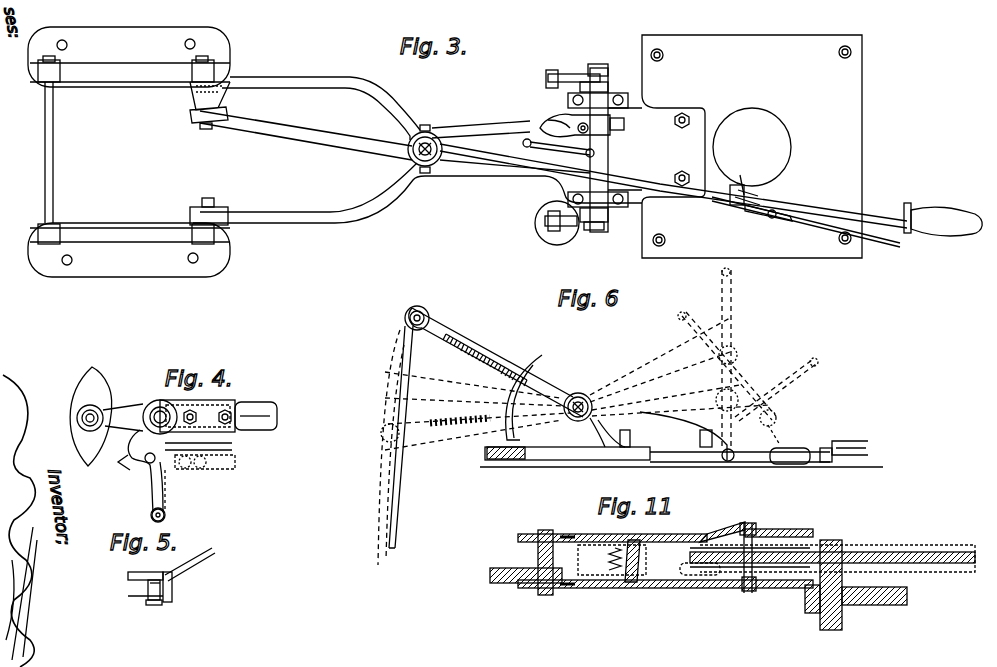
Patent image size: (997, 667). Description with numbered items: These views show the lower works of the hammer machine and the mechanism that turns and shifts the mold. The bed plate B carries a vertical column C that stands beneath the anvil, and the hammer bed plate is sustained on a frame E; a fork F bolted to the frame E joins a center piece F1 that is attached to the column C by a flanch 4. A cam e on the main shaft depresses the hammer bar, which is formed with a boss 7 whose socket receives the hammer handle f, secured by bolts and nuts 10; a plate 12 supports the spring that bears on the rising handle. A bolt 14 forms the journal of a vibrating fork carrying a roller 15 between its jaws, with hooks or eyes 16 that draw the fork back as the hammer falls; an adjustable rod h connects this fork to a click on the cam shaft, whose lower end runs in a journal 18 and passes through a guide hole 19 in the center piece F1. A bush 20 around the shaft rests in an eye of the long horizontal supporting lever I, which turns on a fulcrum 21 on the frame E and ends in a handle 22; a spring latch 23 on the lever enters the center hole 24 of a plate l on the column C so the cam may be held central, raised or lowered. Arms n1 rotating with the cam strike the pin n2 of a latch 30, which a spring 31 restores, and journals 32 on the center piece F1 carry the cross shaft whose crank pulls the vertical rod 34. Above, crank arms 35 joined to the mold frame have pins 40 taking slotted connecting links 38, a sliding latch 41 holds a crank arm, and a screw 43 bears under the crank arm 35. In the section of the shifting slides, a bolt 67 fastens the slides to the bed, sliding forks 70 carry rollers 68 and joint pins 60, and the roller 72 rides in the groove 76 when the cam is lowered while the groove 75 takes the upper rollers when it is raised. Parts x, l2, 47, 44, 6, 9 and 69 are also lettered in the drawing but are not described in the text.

In FIG. 3, the frame E is at (129, 152).
In FIG. 3, the fork F is at (315, 155).
In FIG. 3, the center piece F1 is at (630, 149).
In FIG. 3, the long horizontal supporting lever I is at (553, 169).
In FIG. 3, the bed plate B is at (752, 146).
In FIG. 3, the vertical column C is at (752, 147).
In FIG. 3, the guide hole 19 is at (417, 156).
In FIG. 3, the bush 20 is at (541, 181).
In FIG. 3, the fulcrum 21 is at (210, 115).
In FIG. 3, the handle 22 is at (943, 217).
In FIG. 3, the spring latch 23 is at (806, 226).
In FIG. 3, the center hole 24 is at (753, 200).
In FIG. 3, the flanch 4 is at (736, 185).
In FIG. 3, the plate l is at (729, 190).
In FIG. 3, the latch 30 is at (577, 113).
In FIG. 3, the spring 31 is at (563, 152).
In FIG. 3, the journals 32 is at (598, 150).
In FIG. 3, the vertical rod 34 is at (577, 75).
In FIG. 6, the vertical rod 34 is at (474, 445).
In FIG. 3, the arms n1 is at (481, 127).
In FIG. 3, the pin n2 is at (557, 226).
In FIG. 6, the sliding latch 41 is at (494, 361).
In FIG. 6, the pivot hub x is at (579, 397).
In FIG. 6, the curved sector l2 is at (562, 400).
In FIG. 6, the base bracket 47 is at (501, 448).
In FIG. 6, the hammer handle f is at (681, 461).
In FIG. 6, the screw 43 is at (673, 436).
In FIG. 6, the crank arms 35 is at (704, 364).
In FIG. 6, the connecting link 38 is at (780, 434).
In FIG. 6, the pin 40 is at (741, 456).
In FIG. 6, the end bracket 44 is at (862, 446).
In FIG. 4, the cam e is at (91, 416).
In FIG. 4, the connecting arm 6 is at (123, 421).
In FIG. 4, the bolts and nuts 10 is at (189, 417).
In FIG. 4, the plate 12 is at (251, 409).
In FIG. 4, the adjustable rod h is at (200, 450).
In FIG. 5, the adjustable rod h is at (190, 555).
In FIG. 4, the lever 9 is at (138, 475).
In FIG. 5, the lever 9 is at (147, 604).
In FIG. 4, the bolt 14 is at (150, 514).
In FIG. 5, the hook 16 is at (142, 582).
In FIG. 5, the roller 15 is at (155, 592).
In FIG. 11, the sliding fork 70 is at (665, 558).
In FIG. 11, the bolt 67 is at (526, 562).
In FIG. 11, the internal webs 69 is at (593, 559).
In FIG. 11, the pin 60 is at (612, 560).
In FIG. 11, the slot or groove 75 is at (832, 560).
In FIG. 11, the roller 68 is at (750, 554).
In FIG. 11, the boss 7 is at (820, 552).
In FIG. 11, the roller 72 is at (796, 585).
In FIG. 11, the groove 76 is at (879, 588).
In FIG. 11, the journal 18 is at (813, 606).